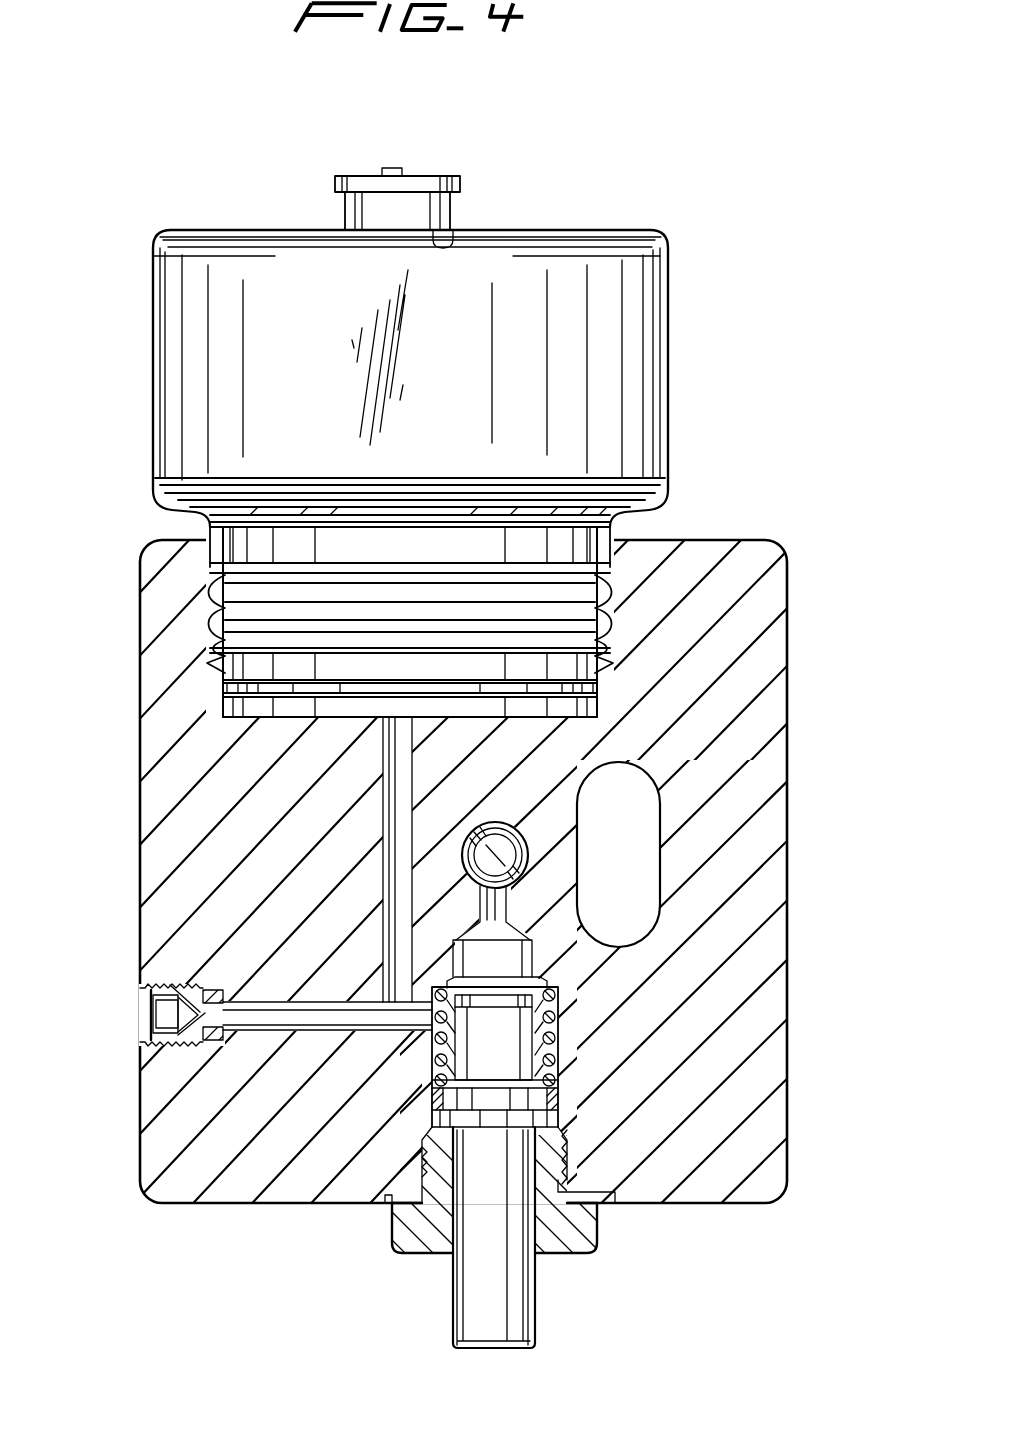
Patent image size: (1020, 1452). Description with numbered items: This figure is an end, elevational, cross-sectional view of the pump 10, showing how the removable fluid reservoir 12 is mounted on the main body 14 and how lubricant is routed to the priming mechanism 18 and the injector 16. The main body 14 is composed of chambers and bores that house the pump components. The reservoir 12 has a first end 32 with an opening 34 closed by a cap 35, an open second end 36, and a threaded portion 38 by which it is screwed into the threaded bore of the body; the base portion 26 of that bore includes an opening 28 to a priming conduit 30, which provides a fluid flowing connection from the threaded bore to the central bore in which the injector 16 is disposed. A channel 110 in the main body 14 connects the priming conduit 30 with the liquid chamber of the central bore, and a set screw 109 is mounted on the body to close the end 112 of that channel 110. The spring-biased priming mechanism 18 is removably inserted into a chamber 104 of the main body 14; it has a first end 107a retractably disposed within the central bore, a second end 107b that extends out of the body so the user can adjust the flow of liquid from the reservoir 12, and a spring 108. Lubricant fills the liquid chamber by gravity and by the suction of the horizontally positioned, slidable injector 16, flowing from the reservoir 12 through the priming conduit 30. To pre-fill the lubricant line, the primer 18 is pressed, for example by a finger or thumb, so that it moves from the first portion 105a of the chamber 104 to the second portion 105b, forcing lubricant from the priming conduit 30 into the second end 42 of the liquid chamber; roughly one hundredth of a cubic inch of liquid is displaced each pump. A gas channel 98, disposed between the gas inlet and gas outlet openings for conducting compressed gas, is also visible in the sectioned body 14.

The pump 10 is at (795, 278).
The fluid reservoir 12 is at (311, 385).
The main body 14 is at (745, 622).
The fluid piston or injector 16 is at (528, 834).
The priming mechanism 18 is at (562, 1298).
The base portion 26 is at (553, 718).
The opening 28 is at (403, 712).
The priming conduit 30 is at (395, 844).
The first end 32 is at (588, 237).
The opening 34 is at (444, 240).
The cap 35 is at (407, 192).
The open second end 36 is at (262, 718).
The threaded portion 38 is at (215, 587).
The second end 42 is at (503, 910).
The gas channel 98 is at (627, 807).
The chamber 104 is at (428, 1190).
The first portion 105a is at (566, 1150).
The second portion 105b is at (525, 932).
The first end 107a is at (512, 947).
The second end 107b is at (476, 1310).
The spring 108 is at (560, 1030).
The set screw 109 is at (150, 1024).
The channel 110 is at (268, 1026).
The end 112 is at (180, 988).